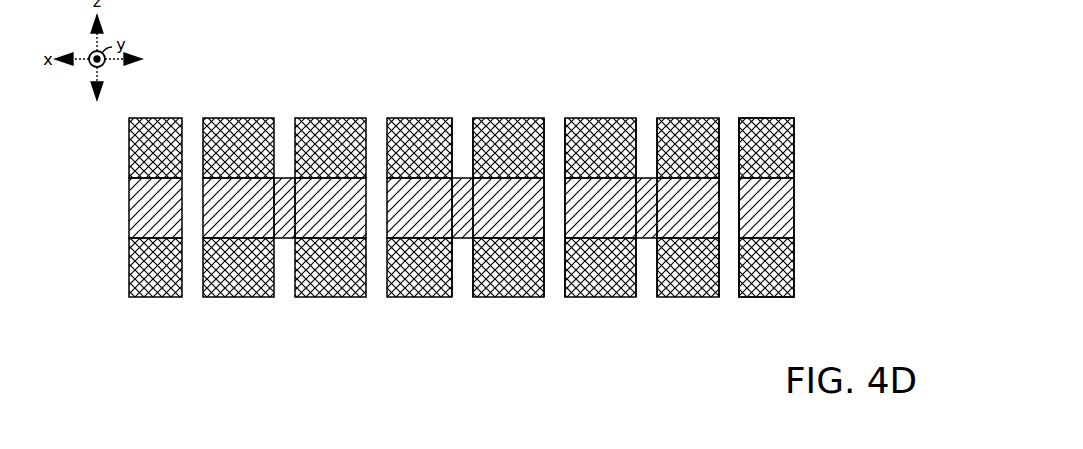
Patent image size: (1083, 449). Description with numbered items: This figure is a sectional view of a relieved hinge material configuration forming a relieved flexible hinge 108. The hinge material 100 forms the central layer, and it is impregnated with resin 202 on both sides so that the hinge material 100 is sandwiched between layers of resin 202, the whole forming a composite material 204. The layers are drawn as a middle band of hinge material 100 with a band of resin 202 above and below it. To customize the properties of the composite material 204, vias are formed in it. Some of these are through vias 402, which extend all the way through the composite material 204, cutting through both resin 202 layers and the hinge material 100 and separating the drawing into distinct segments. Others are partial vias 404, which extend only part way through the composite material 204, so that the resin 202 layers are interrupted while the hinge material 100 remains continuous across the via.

The relieved flexible hinge 108 is at (341, 95).
The resin 202 is at (797, 178).
The hinge material 100 is at (797, 238).
The composite material 204 is at (786, 112).
The through vias 402 is at (560, 108).
The partial vias 404 is at (468, 301).